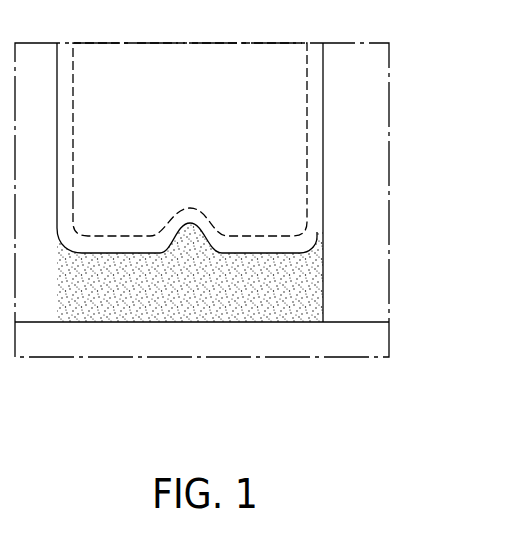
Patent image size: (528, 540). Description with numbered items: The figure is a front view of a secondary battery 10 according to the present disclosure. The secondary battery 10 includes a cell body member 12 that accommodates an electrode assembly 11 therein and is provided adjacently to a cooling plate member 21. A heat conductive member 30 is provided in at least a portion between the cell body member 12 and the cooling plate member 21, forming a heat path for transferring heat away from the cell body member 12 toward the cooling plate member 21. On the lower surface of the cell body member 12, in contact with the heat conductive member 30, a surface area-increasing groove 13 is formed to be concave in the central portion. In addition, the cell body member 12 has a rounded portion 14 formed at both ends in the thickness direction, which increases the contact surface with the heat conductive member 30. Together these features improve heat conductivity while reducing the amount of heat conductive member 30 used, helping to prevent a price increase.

The secondary battery 10 is at (290, 148).
The electrode assembly 11 is at (307, 128).
The cell body member 12 is at (267, 148).
The surface area-increasing groove 13 is at (198, 228).
The rounded portion 14 is at (317, 232).
The cooling plate member 21 is at (377, 346).
The heat conductive member 30 is at (313, 282).